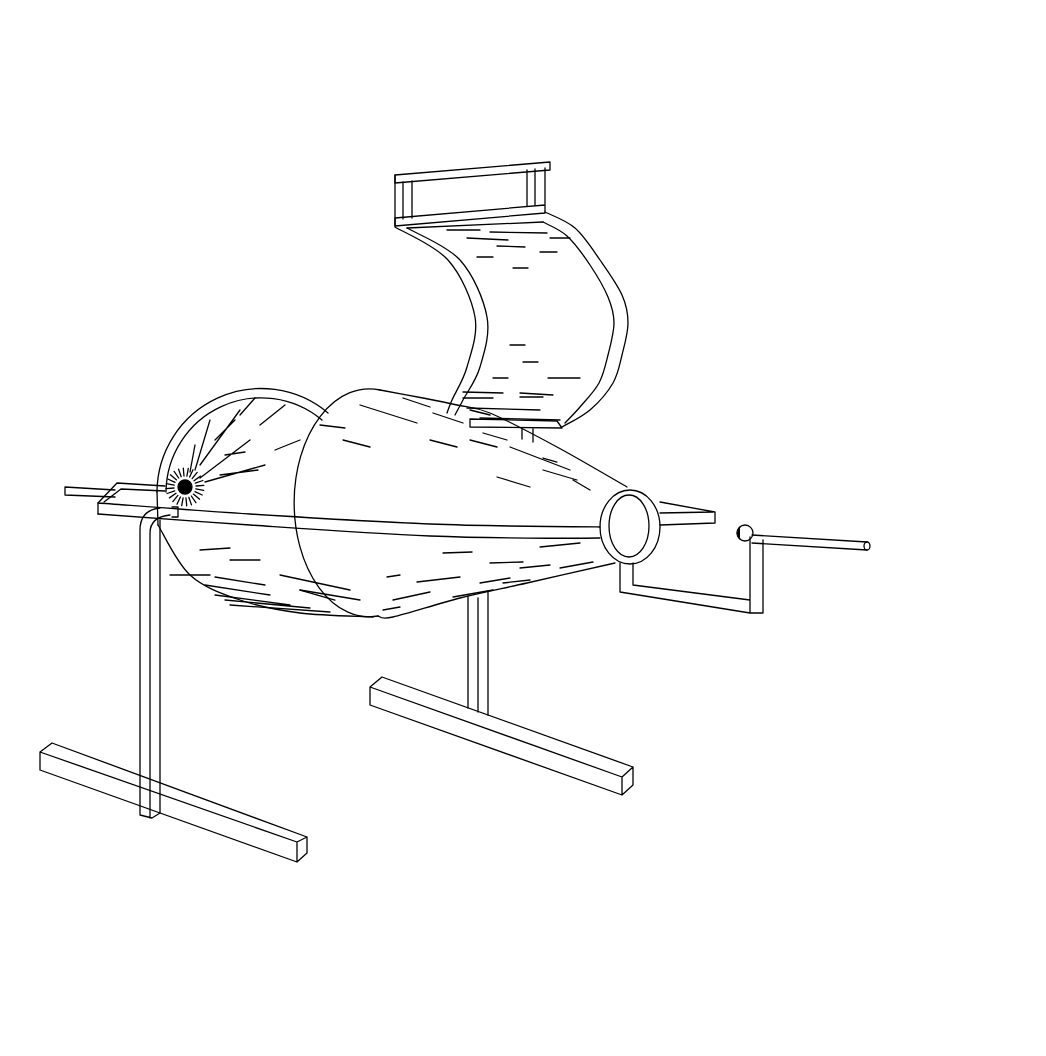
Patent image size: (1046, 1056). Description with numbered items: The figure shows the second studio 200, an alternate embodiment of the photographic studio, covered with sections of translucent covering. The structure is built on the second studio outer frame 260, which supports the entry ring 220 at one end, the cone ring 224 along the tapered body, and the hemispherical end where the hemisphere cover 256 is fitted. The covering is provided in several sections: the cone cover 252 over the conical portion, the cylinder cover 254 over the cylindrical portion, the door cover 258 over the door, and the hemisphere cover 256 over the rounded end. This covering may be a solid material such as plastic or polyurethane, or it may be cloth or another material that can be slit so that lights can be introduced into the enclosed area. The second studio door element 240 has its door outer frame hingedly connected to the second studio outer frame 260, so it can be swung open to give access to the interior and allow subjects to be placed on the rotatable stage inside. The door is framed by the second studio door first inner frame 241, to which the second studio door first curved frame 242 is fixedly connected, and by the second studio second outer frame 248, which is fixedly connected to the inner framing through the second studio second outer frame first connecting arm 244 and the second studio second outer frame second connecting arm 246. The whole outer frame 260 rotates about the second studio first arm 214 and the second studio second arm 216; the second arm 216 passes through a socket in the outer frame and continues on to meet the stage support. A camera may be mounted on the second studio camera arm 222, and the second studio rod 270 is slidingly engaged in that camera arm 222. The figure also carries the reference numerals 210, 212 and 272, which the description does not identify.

The second studio 200 is at (728, 177).
The base 210 is at (553, 760).
The base 212 is at (212, 828).
The second studio first arm 214 is at (488, 648).
The second studio second arm 216 is at (148, 706).
The entry ring 220 is at (643, 493).
The second studio camera arm 222 is at (253, 392).
The cone ring 224 is at (347, 403).
The second studio door element 240 is at (680, 323).
The second studio door first inner frame 241 is at (550, 427).
The second studio door first curved frame 242 is at (615, 265).
The second studio second outer frame first connecting arm 244 is at (535, 190).
The second studio second outer frame second connecting arm 246 is at (398, 202).
The second studio second outer frame 248 is at (463, 173).
The cone cover 252 is at (450, 490).
The cylinder cover 254 is at (245, 548).
The hemisphere cover 256 is at (193, 462).
The door cover 258 is at (578, 333).
The second studio outer frame 260 is at (437, 522).
The second studio rod 270 is at (813, 540).
The knob 272 is at (750, 532).